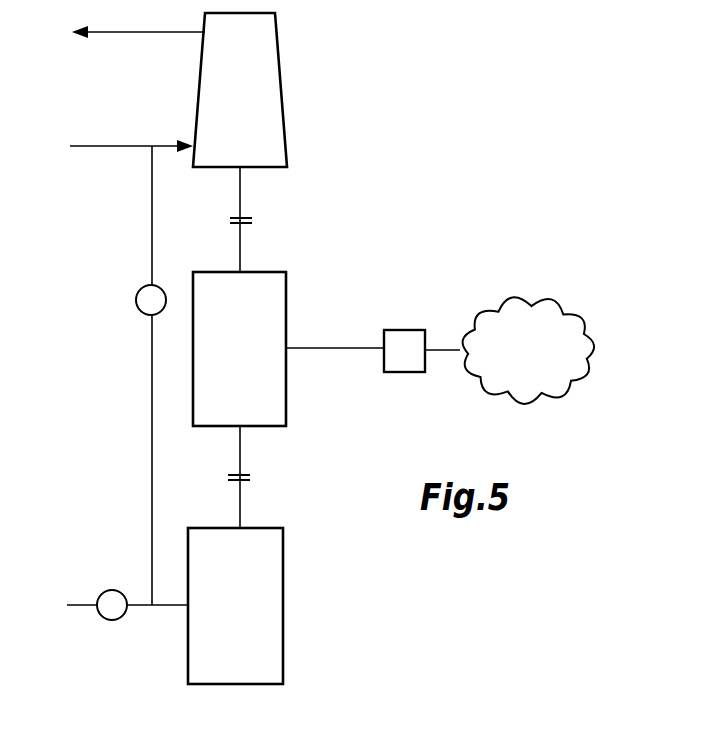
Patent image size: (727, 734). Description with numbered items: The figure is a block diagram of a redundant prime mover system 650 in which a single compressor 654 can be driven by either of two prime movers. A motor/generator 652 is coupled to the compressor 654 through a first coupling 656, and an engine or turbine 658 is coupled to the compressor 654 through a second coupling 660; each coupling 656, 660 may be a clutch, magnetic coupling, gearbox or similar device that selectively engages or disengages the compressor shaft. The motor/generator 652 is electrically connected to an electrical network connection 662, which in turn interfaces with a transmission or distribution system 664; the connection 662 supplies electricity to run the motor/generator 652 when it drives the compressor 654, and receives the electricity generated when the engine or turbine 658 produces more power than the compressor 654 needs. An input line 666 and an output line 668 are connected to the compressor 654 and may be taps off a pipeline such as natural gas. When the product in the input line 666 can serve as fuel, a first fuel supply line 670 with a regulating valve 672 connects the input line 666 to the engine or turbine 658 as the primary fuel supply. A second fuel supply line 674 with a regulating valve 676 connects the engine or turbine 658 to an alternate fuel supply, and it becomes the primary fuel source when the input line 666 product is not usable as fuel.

The redundant prime mover system 650 is at (413, 160).
The motor/generator 652 is at (286, 308).
The compressor 654 is at (287, 150).
The first coupling 656 is at (250, 220).
The engine or turbine 658 is at (283, 563).
The second coupling 660 is at (250, 477).
The electrical network connection 662 is at (402, 330).
The transmission or distribution system 664 is at (533, 303).
The input line 666 is at (113, 146).
The output line 668 is at (132, 32).
The first fuel supply line 670 is at (147, 402).
The regulating valve 672 is at (136, 295).
The second fuel supply line 674 is at (167, 607).
The regulating valve 676 is at (110, 590).